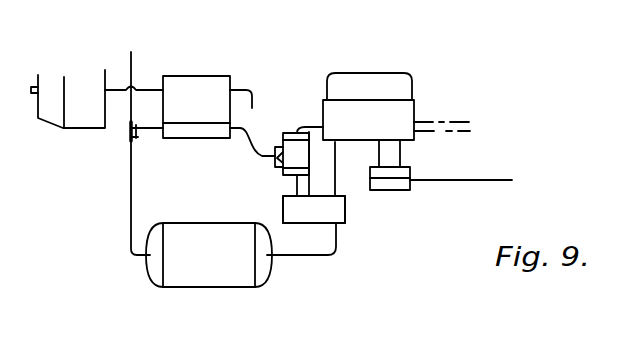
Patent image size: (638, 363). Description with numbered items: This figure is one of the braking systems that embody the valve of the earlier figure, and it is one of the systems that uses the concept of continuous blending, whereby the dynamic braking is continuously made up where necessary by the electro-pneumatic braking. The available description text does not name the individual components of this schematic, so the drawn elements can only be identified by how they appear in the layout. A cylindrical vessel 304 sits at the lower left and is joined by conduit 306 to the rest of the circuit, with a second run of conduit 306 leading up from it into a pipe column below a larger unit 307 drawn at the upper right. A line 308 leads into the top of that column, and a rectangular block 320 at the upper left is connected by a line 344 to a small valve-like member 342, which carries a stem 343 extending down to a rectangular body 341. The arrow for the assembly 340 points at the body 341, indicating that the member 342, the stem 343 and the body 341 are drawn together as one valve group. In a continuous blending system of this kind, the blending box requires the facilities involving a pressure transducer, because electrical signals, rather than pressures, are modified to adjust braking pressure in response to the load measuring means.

The tank 304 is at (293, 315).
The conduit 306 is at (335, 155).
The compressor 307 is at (370, 53).
The conduit 308 is at (308, 126).
The heat exchanger 320 is at (217, 53).
The valve assembly 340 is at (407, 245).
The valve body 341 is at (320, 212).
The valve 342 is at (280, 166).
The valve stem 343 is at (289, 183).
The conduit 344 is at (249, 146).